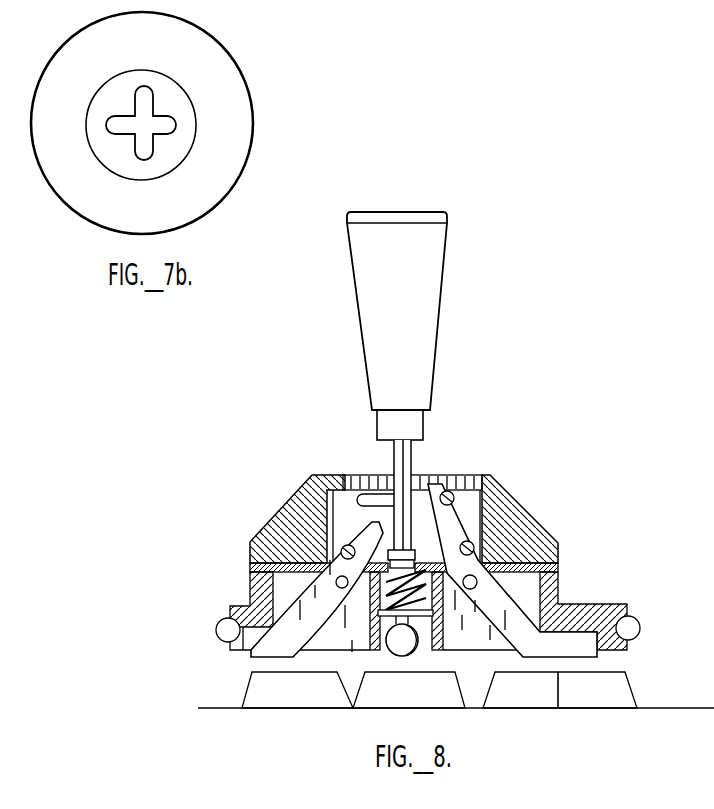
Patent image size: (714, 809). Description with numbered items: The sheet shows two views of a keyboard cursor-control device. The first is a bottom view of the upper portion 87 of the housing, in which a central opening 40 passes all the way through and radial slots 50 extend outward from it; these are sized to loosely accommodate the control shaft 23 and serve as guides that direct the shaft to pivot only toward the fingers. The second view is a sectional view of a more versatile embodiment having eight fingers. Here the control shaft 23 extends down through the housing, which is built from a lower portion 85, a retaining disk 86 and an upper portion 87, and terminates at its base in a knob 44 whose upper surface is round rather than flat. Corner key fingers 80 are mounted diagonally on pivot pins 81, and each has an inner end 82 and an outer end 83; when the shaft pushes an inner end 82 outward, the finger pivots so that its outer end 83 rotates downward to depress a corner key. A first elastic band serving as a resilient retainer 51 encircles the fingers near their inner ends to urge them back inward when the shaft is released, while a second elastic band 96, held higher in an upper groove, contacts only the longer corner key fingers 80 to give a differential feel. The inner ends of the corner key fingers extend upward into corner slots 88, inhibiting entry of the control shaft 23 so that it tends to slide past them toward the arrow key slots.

In FIG. 7b, the central opening 40 is at (146, 121).
In FIG. 7b, the radial slot 50 is at (168, 125).
In FIG. 8, the control shaft 23 is at (412, 458).
In FIG. 8, the inner end 82 is at (404, 476).
In FIG. 8, the corner slot 88 is at (444, 478).
In FIG. 8, the second elastic band 96 is at (478, 480).
In FIG. 8, the corner key finger 80 is at (452, 537).
In FIG. 8, the upper portion 87 is at (545, 535).
In FIG. 8, the retaining disk 86 is at (558, 568).
In FIG. 8, the lower portion 85 is at (612, 606).
In FIG. 8, the outer end 83 is at (593, 660).
In FIG. 8, the pivot pin 81 is at (470, 589).
In FIG. 8, the knob 44 is at (417, 652).
In FIG. 8, the resilient retainer 51 is at (343, 545).